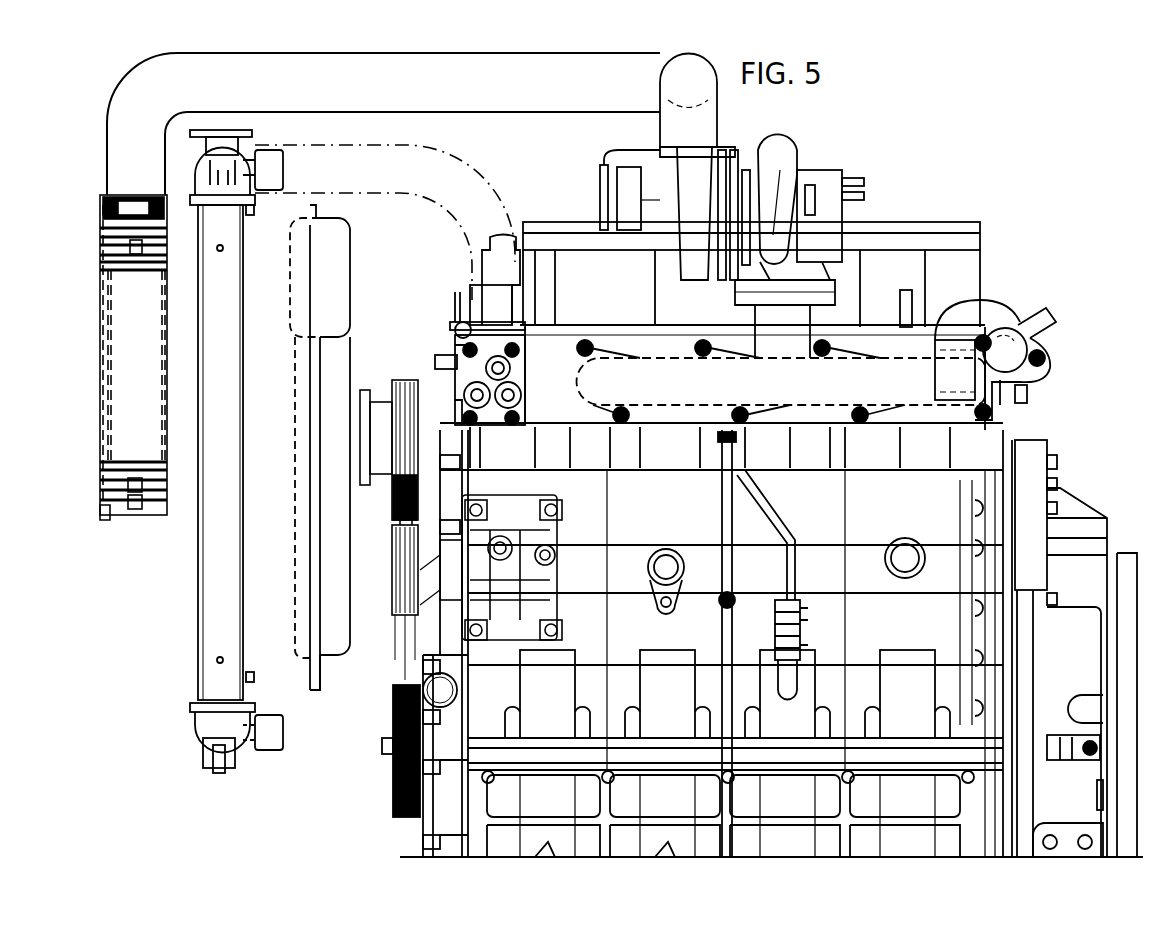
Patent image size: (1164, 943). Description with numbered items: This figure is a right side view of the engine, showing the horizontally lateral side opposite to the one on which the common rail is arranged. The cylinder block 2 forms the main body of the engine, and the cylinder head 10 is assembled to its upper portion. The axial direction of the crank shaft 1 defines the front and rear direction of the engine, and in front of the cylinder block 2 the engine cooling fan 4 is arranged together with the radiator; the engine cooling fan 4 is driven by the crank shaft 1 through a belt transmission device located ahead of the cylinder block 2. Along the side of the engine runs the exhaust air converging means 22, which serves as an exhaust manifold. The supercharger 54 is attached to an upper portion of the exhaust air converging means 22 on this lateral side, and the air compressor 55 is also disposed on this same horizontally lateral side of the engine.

The crank shaft 1 is at (385, 750).
The cylinder block 2 is at (1077, 486).
The engine cooling fan 4 is at (337, 282).
The cylinder head 10 is at (665, 415).
The exhaust air converging means 22 is at (872, 365).
The supercharger 54 is at (785, 175).
The air compressor 55 is at (553, 545).